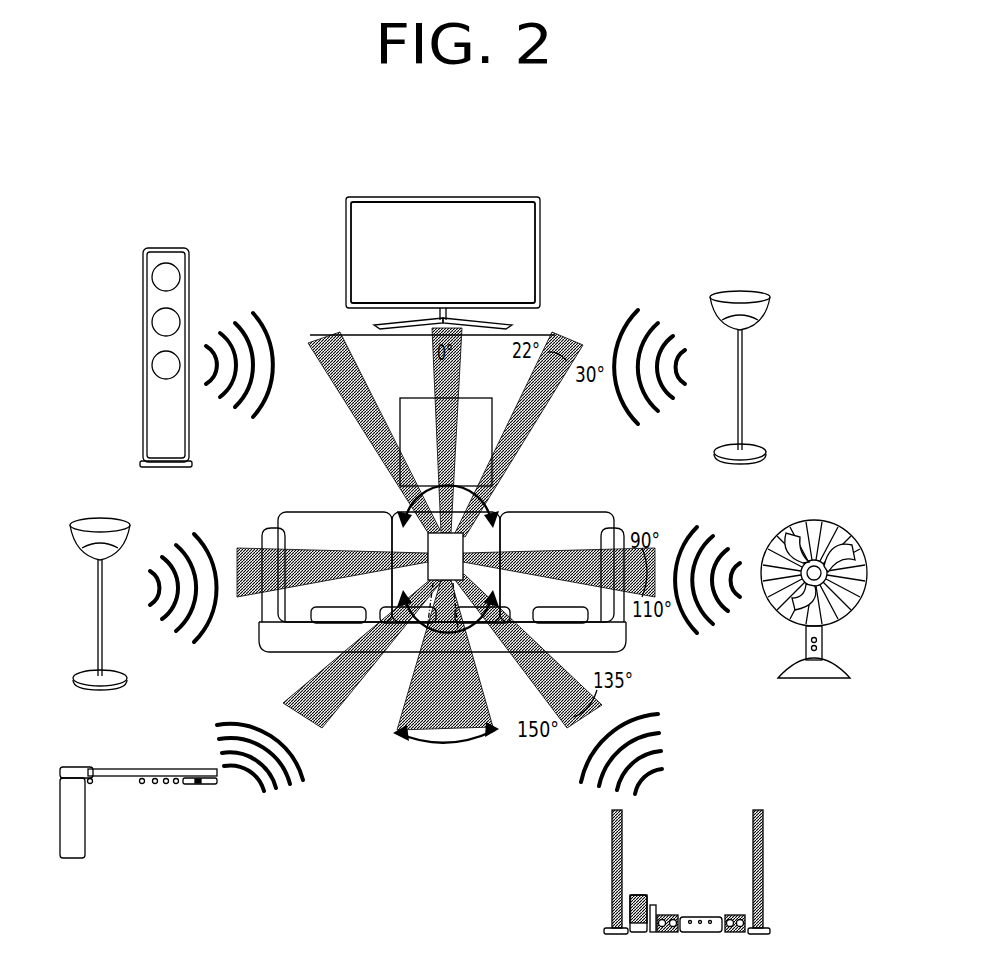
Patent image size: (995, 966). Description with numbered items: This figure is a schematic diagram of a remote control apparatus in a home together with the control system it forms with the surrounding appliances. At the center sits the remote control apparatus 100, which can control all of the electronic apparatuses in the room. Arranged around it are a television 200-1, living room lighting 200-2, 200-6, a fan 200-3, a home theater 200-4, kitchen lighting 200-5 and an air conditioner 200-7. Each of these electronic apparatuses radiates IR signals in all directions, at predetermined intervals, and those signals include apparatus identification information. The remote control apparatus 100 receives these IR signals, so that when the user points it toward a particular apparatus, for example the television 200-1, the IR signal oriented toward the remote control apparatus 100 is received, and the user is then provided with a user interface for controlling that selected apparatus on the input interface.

The remote control apparatus 100 is at (463, 545).
The television (TV) 200-1 is at (443, 196).
The living room lighting 200-2 is at (740, 293).
The fan 200-3 is at (815, 522).
The home theater 200-4 is at (764, 862).
The kitchen lighting 200-5 is at (72, 858).
The living room lighting 200-6 is at (94, 520).
The air conditioner 200-7 is at (165, 248).